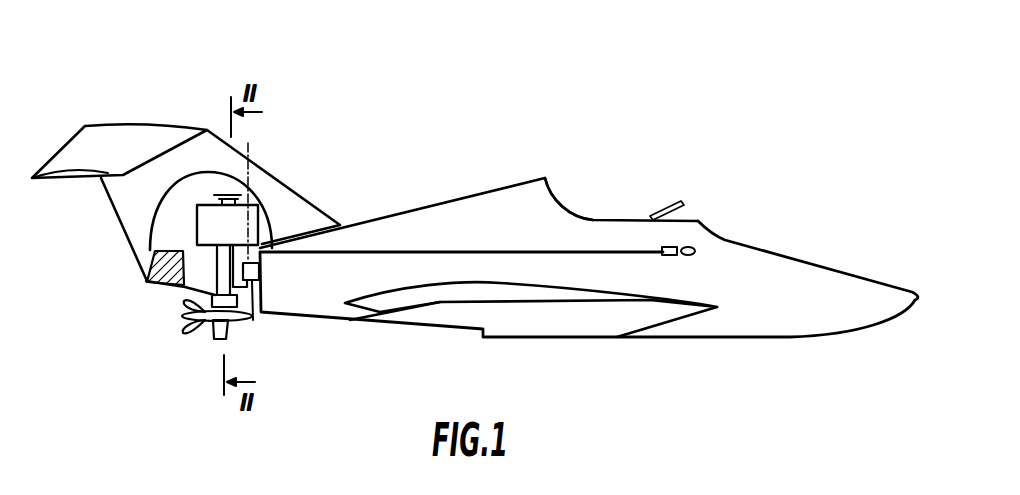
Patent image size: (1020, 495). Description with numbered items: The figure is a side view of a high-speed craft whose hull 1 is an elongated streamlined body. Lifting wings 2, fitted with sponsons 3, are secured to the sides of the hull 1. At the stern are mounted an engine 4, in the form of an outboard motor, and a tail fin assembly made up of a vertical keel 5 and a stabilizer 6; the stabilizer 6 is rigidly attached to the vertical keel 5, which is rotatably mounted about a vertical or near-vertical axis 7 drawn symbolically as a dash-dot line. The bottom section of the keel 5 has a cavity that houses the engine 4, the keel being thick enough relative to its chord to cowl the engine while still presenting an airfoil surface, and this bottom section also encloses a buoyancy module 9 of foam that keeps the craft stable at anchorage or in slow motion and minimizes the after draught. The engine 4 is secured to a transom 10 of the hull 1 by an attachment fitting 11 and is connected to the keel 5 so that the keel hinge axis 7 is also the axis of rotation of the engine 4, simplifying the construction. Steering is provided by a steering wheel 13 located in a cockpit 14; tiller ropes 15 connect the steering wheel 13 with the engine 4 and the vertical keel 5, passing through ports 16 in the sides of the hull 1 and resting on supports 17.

The hull 1 is at (833, 282).
The lifting wings 2 is at (442, 295).
The sponsons 3 is at (648, 320).
The engine 4 is at (238, 220).
The vertical keel 5 is at (201, 148).
The stabilizer 6 is at (100, 158).
The axis 7 is at (248, 155).
The buoyancy module 9 is at (146, 281).
The transom 10 is at (260, 298).
The attachment fitting 11 is at (253, 320).
The steering wheel 13 is at (680, 203).
The cockpit 14 is at (600, 220).
The tiller ropes 15 is at (422, 250).
The ports 16 is at (695, 250).
The supports 17 is at (672, 247).